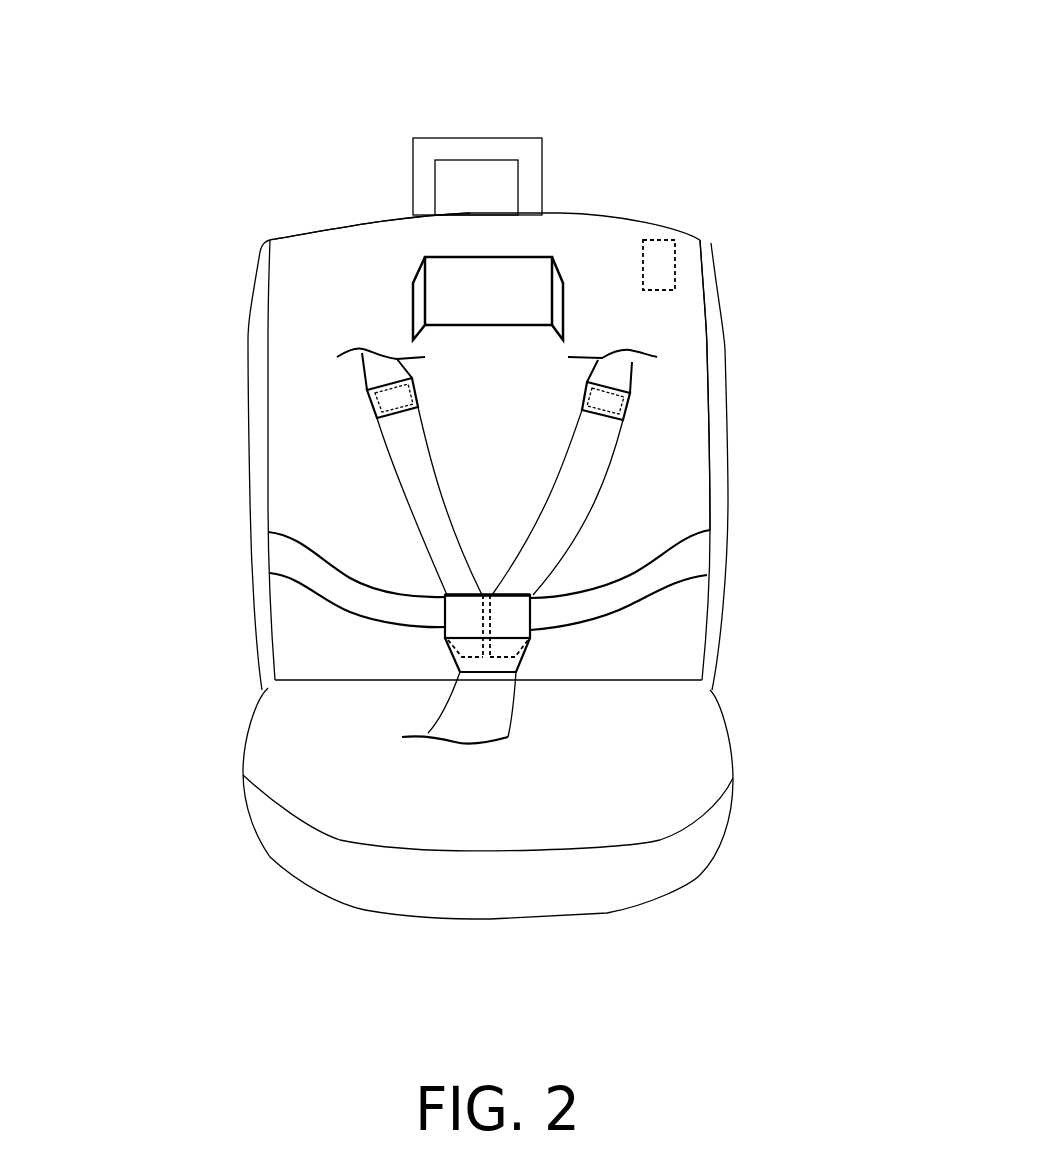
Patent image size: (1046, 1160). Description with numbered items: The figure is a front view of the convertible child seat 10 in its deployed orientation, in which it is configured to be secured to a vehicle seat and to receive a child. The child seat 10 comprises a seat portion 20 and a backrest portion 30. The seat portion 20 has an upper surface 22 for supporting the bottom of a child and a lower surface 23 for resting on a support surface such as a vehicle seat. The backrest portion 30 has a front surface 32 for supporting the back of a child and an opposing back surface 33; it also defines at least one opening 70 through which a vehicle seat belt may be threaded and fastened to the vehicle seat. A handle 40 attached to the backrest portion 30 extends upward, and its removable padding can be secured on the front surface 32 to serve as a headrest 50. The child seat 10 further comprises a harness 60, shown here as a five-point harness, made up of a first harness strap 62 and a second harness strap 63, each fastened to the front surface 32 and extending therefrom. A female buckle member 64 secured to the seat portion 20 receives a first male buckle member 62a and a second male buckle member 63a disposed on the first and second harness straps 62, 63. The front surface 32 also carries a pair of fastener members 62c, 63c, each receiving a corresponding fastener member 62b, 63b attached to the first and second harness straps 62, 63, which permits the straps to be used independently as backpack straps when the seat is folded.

The convertible child seat 10 is at (417, 100).
The seat portion 20 is at (494, 799).
The upper surface 22 is at (670, 792).
The lower surface 23 is at (270, 855).
The backrest portion 30 is at (244, 415).
The front surface 32 is at (671, 313).
The back surface 33 is at (317, 230).
The handle 40 is at (560, 175).
The headrest 50 is at (458, 310).
The harness 60 is at (547, 652).
The first harness strap 62 is at (263, 455).
The first male buckle member 62a is at (468, 628).
The fastener member 62b is at (392, 405).
The fastener member 62c is at (392, 370).
The second harness strap 63 is at (729, 470).
The second male buckle member 63a is at (517, 620).
The fastener member 63b is at (611, 410).
The fastener member 63c is at (611, 377).
The female buckle member 64 is at (485, 665).
The opening 70 is at (663, 262).